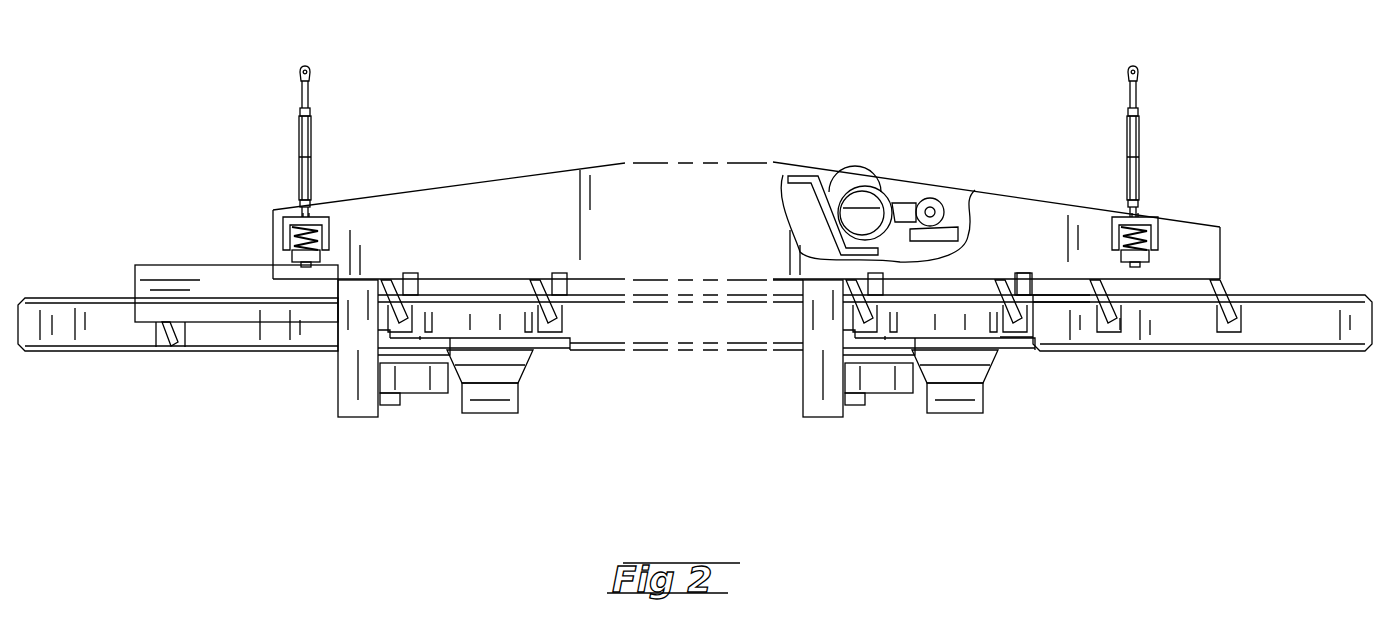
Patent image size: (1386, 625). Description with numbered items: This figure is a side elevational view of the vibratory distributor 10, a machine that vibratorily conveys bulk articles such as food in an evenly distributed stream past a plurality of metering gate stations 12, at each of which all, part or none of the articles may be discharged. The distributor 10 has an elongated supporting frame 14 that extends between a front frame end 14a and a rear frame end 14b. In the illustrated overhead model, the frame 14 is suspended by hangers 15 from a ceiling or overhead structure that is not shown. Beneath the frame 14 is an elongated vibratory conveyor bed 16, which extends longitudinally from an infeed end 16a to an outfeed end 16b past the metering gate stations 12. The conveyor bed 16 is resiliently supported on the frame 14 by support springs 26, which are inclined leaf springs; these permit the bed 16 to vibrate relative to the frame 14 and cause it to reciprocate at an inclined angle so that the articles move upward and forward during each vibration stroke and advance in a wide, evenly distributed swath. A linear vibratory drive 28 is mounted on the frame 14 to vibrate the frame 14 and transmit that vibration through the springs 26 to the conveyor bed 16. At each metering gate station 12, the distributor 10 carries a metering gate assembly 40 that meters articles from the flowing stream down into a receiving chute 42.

The vibratory distributor 10 is at (952, 118).
The metering gate station 12 is at (510, 432).
The supporting frame 14 is at (505, 228).
The front frame end 14a is at (281, 210).
The rear frame end 14b is at (1195, 249).
The hanger 15 is at (313, 158).
The vibratory conveyor bed 16 is at (1173, 324).
The infeed end 16a is at (98, 328).
The outfeed end 16b is at (1291, 322).
The support spring 26 is at (398, 282).
The linear vibratory drive 28 is at (860, 178).
The metering gate assembly 40 is at (416, 400).
The receiving chute 42 is at (500, 393).